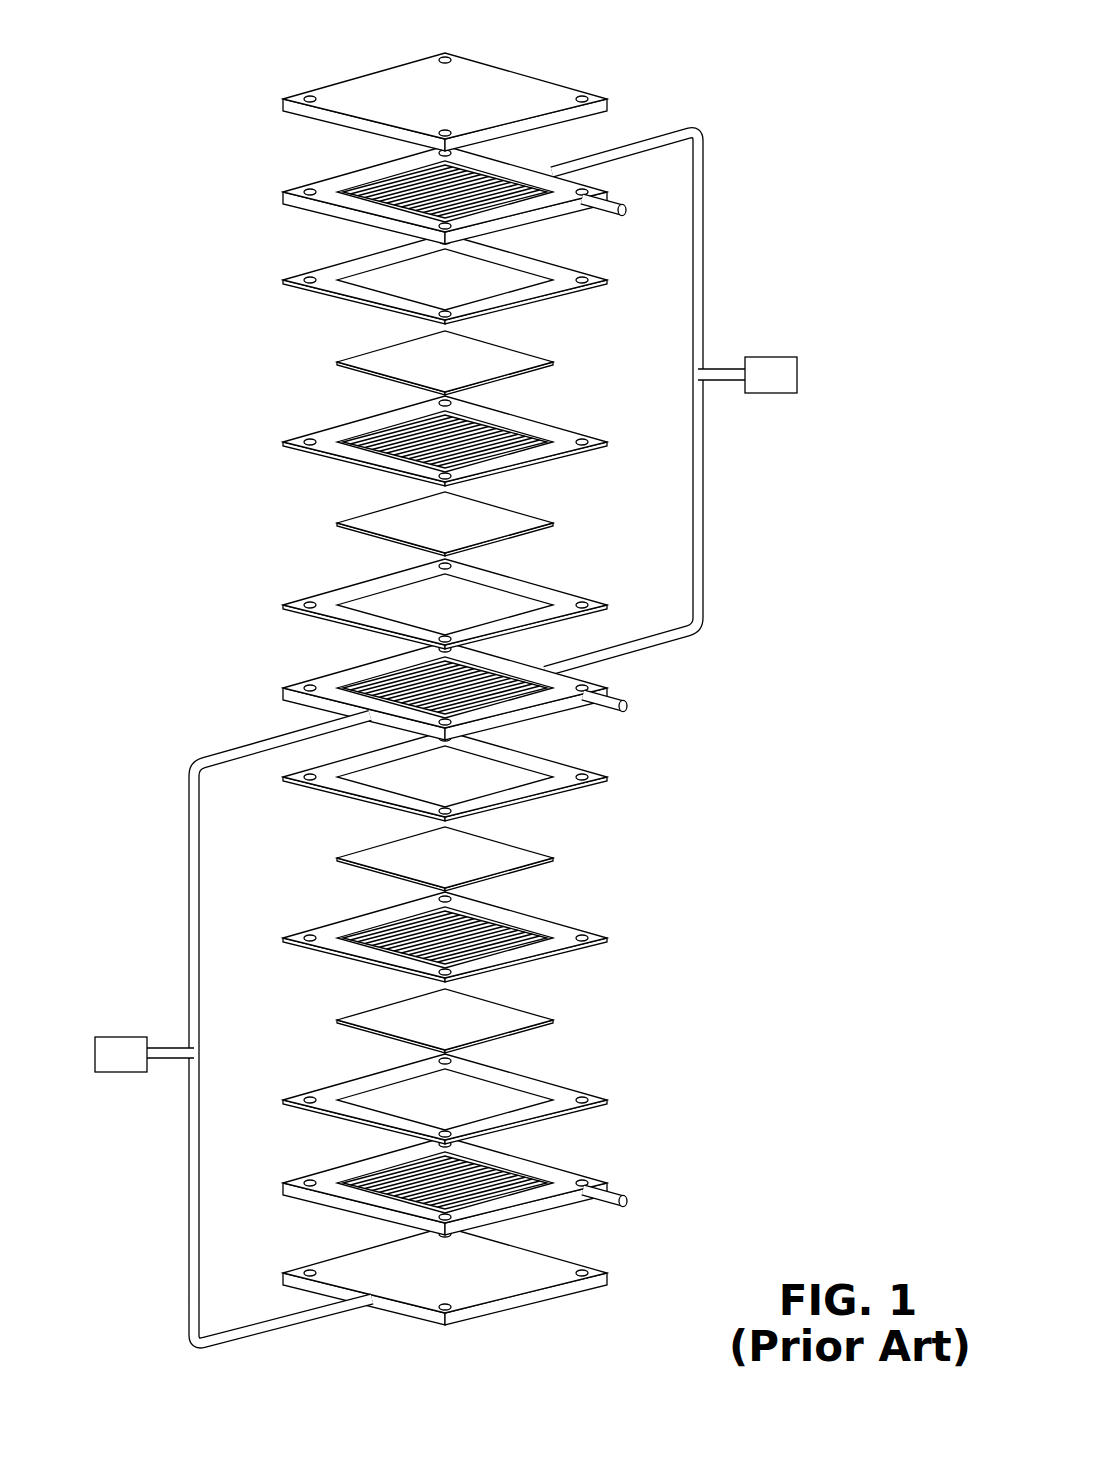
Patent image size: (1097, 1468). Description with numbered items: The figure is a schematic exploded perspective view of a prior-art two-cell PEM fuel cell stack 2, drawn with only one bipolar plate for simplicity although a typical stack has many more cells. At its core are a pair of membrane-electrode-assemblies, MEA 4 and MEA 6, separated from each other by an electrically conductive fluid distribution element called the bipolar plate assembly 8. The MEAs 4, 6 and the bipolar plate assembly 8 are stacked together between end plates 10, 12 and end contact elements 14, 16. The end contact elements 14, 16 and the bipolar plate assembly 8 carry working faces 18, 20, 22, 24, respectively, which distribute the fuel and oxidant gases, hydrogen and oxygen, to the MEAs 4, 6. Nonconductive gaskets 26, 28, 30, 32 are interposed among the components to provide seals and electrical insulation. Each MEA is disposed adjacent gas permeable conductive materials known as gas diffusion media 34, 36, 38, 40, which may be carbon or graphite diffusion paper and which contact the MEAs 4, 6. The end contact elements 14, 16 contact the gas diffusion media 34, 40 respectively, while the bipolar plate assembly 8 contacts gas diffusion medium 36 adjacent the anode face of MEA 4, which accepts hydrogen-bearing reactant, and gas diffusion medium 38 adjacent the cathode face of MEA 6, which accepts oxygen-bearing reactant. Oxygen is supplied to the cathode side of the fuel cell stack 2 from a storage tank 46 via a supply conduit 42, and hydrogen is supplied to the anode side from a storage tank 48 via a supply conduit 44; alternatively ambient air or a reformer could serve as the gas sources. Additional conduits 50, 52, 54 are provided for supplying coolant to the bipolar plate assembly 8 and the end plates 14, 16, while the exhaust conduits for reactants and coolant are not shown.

The PEM fuel cell stack 2 is at (764, 95).
The membrane-electrode-assembly 4 is at (352, 466).
The membrane-electrode-assembly 6 is at (571, 923).
The bipolar plate assembly 8 is at (446, 691).
The end plate 10 is at (353, 128).
The end plate 12 is at (606, 1262).
The end contact element 14 is at (442, 159).
The end contact element 16 is at (508, 1168).
The working face 18 is at (540, 194).
The working face 20 is at (522, 1172).
The working face 22 is at (530, 700).
The working face 24 is at (446, 691).
The nonconductive gasket 26 is at (363, 305).
The nonconductive gasket 28 is at (357, 627).
The nonconductive gasket 30 is at (608, 778).
The nonconductive gasket 32 is at (566, 1089).
The gas diffusion media 34 is at (390, 377).
The gas diffusion media 36 is at (390, 539).
The gas diffusion media 38 is at (553, 858).
The gas diffusion media 40 is at (553, 1020).
The supply conduit 42 is at (703, 548).
The supply conduit 44 is at (190, 787).
The storage tank 46 is at (787, 357).
The storage tank 48 is at (98, 1037).
The conduit 50 is at (606, 200).
The conduit 52 is at (627, 697).
The conduit 54 is at (628, 1200).